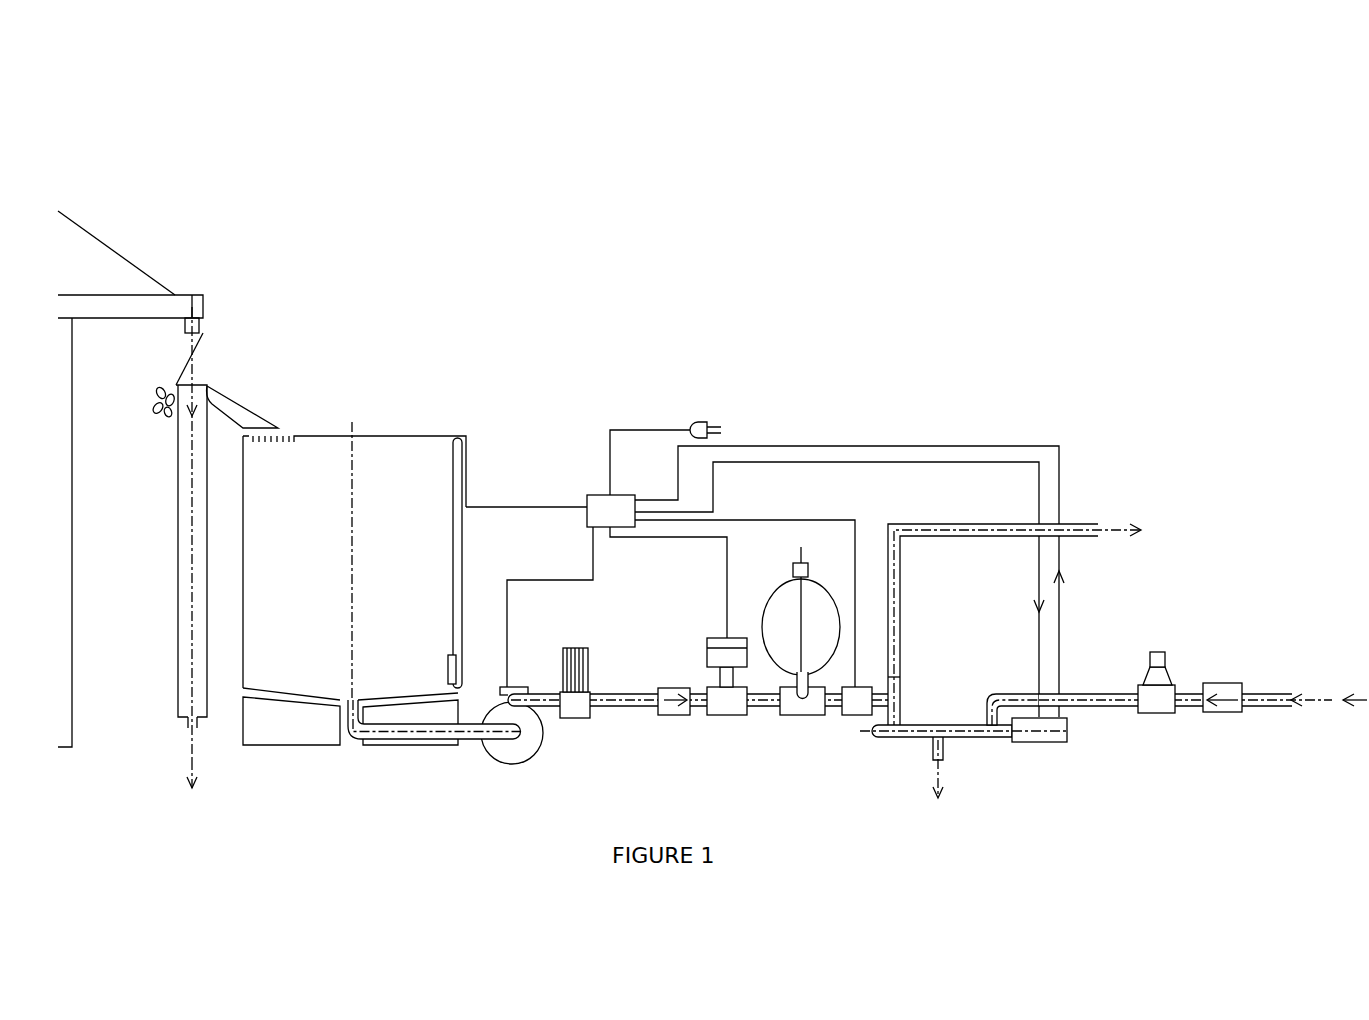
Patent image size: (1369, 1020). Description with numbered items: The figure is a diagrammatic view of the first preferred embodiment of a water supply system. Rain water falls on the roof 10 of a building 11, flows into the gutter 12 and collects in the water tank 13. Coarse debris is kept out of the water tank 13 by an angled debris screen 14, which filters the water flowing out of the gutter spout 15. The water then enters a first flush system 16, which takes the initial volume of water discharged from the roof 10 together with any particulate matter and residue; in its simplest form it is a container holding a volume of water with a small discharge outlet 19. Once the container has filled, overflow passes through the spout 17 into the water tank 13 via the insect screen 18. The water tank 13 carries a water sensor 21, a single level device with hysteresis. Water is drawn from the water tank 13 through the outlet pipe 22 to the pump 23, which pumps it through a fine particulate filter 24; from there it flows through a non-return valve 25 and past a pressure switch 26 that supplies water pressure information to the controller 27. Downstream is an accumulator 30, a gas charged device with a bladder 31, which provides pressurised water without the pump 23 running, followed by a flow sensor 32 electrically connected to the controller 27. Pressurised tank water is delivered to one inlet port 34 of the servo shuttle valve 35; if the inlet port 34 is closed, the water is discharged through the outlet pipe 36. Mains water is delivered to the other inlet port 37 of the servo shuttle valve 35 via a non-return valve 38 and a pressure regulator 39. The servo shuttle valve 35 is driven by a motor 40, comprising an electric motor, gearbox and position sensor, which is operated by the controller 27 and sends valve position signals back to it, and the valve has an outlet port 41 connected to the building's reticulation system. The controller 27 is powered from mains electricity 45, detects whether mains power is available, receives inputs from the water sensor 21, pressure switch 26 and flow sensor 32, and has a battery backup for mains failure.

The roof 10 is at (104, 240).
The building 11 is at (99, 212).
The gutter 12 is at (201, 294).
The water tank 13 is at (459, 571).
The angled debris screen 14 is at (174, 374).
The gutter spout 15 is at (204, 324).
The first flush system 16 is at (178, 567).
The spout 17 is at (244, 412).
The insect screen 18 is at (294, 429).
The discharge outlet 19 is at (181, 728).
The water sensor 21 is at (459, 660).
The outlet pipe 22 is at (407, 749).
The pump 23 is at (532, 758).
The fine particulate filter 24 is at (566, 646).
The non-return valve 25 is at (672, 691).
The pressure switch 26 is at (712, 639).
The controller 27 is at (597, 496).
The accumulator 30 is at (807, 563).
The bladder 31 is at (780, 596).
The flow sensor 32 is at (850, 684).
The inlet port 34 is at (901, 718).
The servo shuttle valve 35 is at (982, 741).
The outlet pipe 36 is at (955, 526).
The inlet port 37 is at (987, 713).
The non-return valve 38 is at (1230, 684).
The pressure regulator 39 is at (1172, 666).
The motor 40 is at (1047, 741).
The outlet port 41 is at (947, 759).
The mains electricity 45 is at (703, 421).